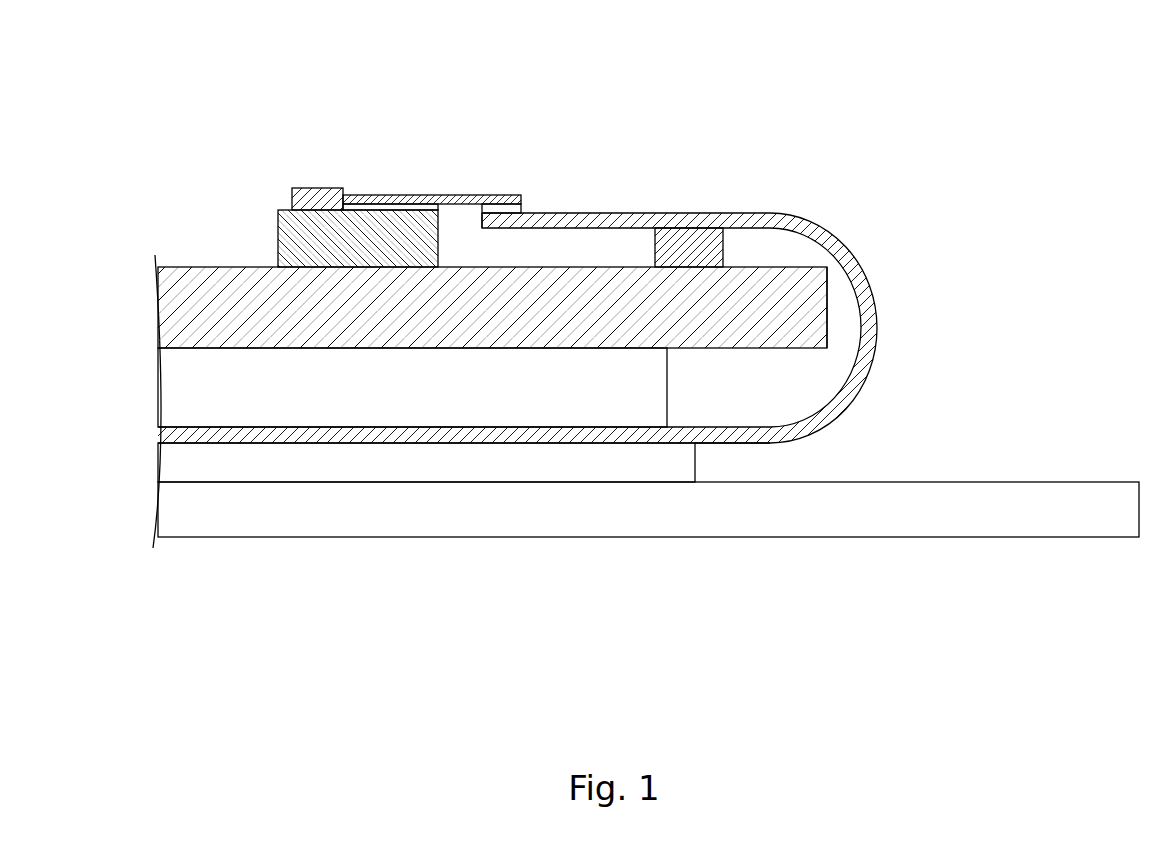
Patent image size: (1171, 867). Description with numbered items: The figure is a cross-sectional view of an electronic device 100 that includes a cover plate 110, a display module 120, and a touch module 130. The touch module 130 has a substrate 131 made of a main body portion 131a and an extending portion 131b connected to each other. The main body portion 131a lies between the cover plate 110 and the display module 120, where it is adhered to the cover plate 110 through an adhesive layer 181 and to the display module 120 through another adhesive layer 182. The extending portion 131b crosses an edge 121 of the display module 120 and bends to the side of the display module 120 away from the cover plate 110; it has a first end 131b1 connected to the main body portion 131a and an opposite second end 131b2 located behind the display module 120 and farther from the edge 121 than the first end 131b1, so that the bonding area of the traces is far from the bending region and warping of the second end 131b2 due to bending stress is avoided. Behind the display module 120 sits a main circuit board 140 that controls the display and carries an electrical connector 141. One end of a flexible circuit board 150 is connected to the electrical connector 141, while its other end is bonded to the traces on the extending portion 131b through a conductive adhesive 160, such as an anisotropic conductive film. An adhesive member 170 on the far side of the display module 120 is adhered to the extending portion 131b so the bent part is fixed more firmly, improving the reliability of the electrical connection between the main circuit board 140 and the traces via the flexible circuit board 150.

The electronic device 100 is at (66, 62).
The cover plate 110 is at (177, 513).
The display module 120 is at (177, 303).
The edge 121 is at (827, 310).
The touch module 130 is at (578, 401).
The substrate 131 is at (520, 401).
The main body portion 131a is at (620, 435).
The extending portion 131b is at (858, 383).
The first end 131b1 is at (702, 447).
The second end 131b2 is at (487, 258).
The main circuit board 140 is at (283, 218).
The electrical connector 141 is at (315, 197).
The flexible circuit board 150 is at (408, 200).
The conductive adhesive 160 is at (505, 207).
The adhesive member 170 is at (692, 240).
The adhesive layer 181 is at (177, 466).
The adhesive layer 182 is at (177, 393).